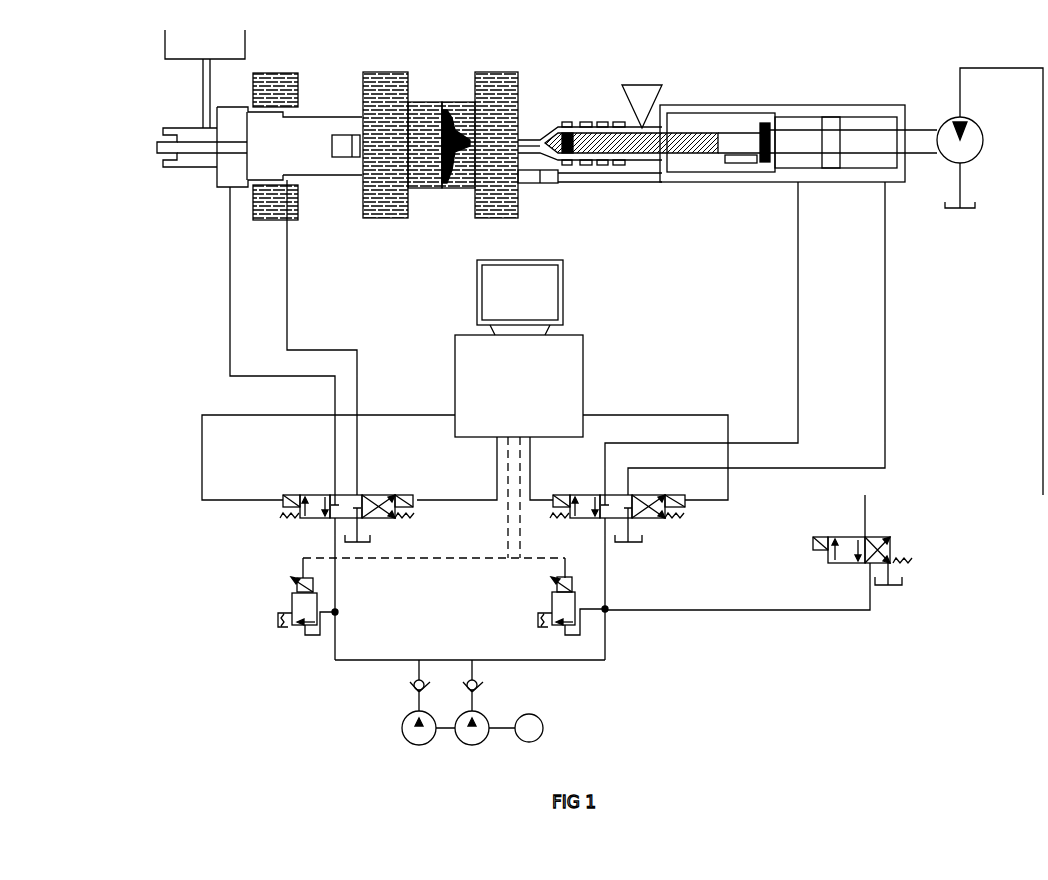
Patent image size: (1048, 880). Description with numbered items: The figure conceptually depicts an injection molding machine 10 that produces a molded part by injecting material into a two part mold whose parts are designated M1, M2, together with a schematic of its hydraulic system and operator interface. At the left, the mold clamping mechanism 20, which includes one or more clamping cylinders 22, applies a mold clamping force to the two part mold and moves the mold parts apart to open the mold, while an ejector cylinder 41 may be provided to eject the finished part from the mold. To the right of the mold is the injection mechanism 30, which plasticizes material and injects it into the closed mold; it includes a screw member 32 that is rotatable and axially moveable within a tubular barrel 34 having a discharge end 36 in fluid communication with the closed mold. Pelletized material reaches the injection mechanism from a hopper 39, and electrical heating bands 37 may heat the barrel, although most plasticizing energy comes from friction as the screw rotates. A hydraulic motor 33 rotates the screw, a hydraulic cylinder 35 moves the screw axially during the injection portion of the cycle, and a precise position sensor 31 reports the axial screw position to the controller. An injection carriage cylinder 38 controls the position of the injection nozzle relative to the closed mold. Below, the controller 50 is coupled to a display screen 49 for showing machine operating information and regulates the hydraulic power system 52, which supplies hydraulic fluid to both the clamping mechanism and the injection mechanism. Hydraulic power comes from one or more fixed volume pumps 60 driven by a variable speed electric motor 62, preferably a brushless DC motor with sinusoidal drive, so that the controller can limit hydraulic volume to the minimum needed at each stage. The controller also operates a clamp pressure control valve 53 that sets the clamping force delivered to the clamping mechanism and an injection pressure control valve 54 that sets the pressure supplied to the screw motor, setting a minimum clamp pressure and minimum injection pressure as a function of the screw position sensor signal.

The injection molding machine 10 is at (350, 60).
The mold part M1 is at (425, 100).
The mold part M2 is at (453, 100).
The clamping mechanism 20 is at (228, 106).
The clamping cylinder 22 is at (225, 172).
The ejector cylinder 41 is at (341, 157).
The discharge end 36 is at (528, 132).
The electrical heating bands 37 is at (584, 122).
The hopper 39 is at (642, 85).
The injection carriage cylinder 38 is at (548, 185).
The tubular barrel 34 is at (647, 160).
The injection mechanism 30 is at (745, 105).
The screw member 32 is at (692, 155).
The position sensor 31 is at (740, 163).
The hydraulic cylinder 35 is at (863, 122).
The hydraulic motor 33 is at (952, 120).
The display screen 49 is at (545, 293).
The controller 50 is at (583, 366).
The hydraulic power system 52 is at (977, 516).
The clamp pressure control valve 53 is at (290, 606).
The injection pressure control valve 54 is at (552, 604).
The fixed volume pump 60 is at (402, 728).
The electric motor 62 is at (543, 728).